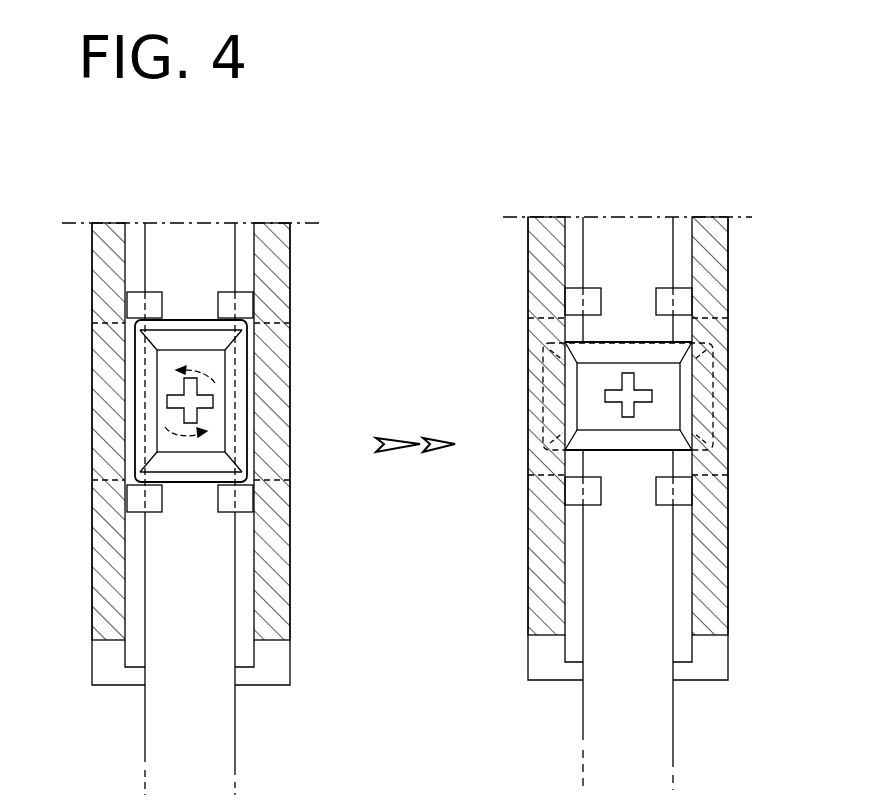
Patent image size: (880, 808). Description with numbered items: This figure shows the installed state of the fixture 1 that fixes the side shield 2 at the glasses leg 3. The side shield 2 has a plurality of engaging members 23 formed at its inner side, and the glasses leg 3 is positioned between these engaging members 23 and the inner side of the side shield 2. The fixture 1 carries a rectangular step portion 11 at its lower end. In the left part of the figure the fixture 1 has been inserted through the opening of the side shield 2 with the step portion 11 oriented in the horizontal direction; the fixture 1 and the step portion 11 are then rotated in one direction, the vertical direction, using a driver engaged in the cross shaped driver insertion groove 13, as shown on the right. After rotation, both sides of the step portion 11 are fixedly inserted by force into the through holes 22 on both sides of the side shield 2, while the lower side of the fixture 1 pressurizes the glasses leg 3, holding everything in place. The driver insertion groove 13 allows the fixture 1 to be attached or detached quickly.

The fixture 1 is at (165, 378).
The side shield 2 is at (282, 593).
The glasses leg 3 is at (226, 738).
The step portion 11 is at (195, 328).
The driver insertion groove 13 is at (628, 412).
The through hole 22 is at (273, 387).
The engaging member 23 is at (138, 300).